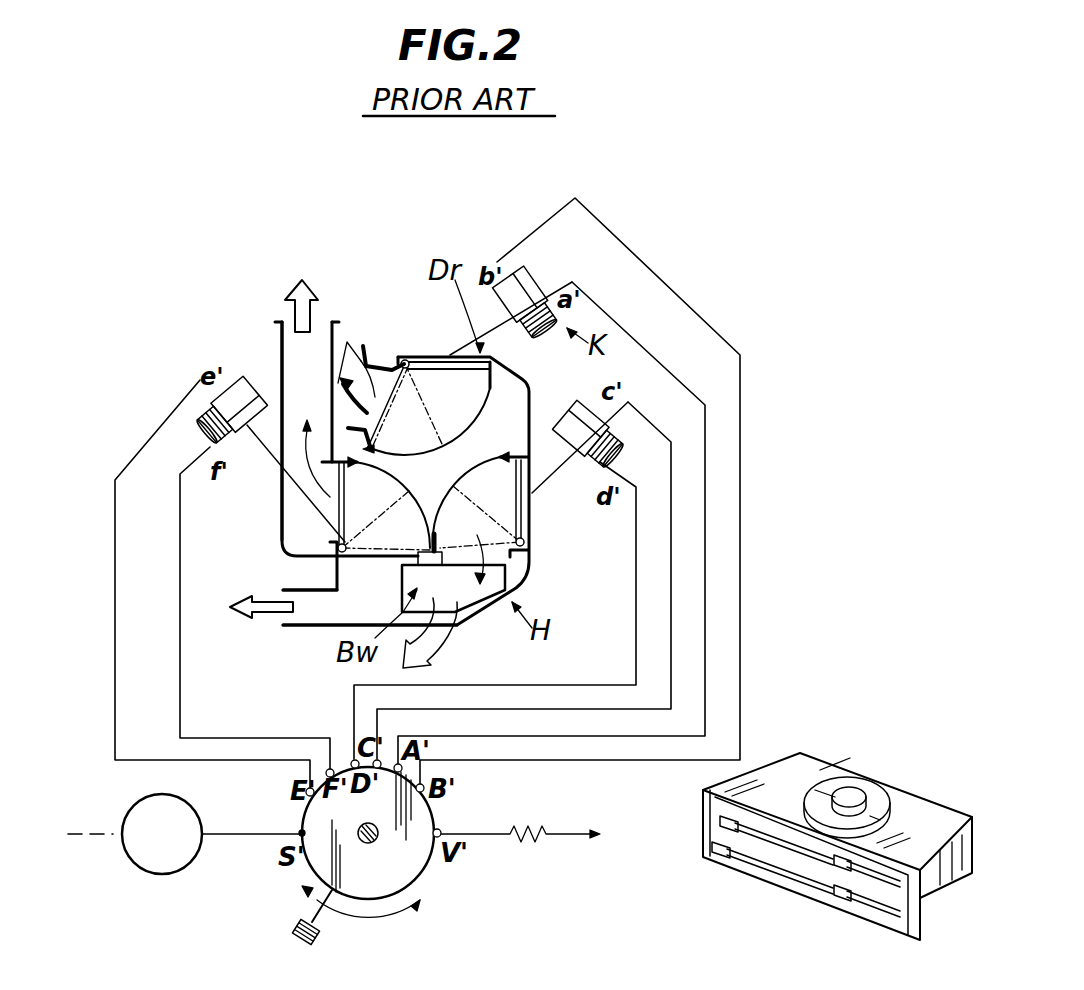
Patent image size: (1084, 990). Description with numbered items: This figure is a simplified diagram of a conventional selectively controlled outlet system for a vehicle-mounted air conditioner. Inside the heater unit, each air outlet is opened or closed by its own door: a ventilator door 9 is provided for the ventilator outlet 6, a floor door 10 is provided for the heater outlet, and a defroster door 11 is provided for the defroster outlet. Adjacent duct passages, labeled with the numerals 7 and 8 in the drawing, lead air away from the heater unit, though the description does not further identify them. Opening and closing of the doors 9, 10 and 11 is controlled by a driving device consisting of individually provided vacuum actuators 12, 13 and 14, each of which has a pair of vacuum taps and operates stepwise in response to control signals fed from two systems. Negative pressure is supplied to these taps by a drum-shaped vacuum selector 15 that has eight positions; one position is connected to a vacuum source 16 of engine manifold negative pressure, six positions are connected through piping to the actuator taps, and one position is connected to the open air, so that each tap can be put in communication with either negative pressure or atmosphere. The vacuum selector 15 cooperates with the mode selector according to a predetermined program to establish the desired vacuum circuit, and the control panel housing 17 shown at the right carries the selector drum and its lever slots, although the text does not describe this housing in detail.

The ventilator outlet 6 is at (375, 368).
The heater duct 7 is at (315, 615).
The defroster duct 8 is at (322, 332).
The ventilator door 9 is at (453, 360).
The floor door 10 is at (530, 488).
The defroster door 11 is at (340, 521).
The vacuum actuator 12 is at (537, 280).
The vacuum actuator 13 is at (568, 412).
The vacuum actuator 14 is at (237, 380).
The vacuum selector 15 is at (416, 866).
The vacuum source 16 is at (178, 847).
The control panel housing 17 is at (783, 878).